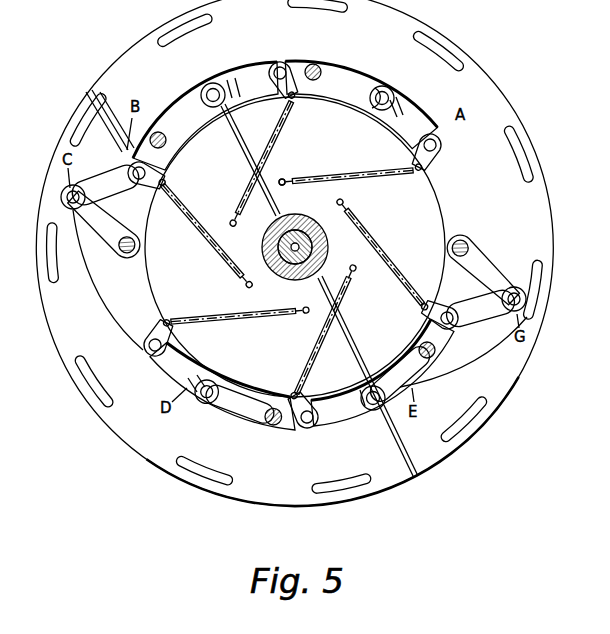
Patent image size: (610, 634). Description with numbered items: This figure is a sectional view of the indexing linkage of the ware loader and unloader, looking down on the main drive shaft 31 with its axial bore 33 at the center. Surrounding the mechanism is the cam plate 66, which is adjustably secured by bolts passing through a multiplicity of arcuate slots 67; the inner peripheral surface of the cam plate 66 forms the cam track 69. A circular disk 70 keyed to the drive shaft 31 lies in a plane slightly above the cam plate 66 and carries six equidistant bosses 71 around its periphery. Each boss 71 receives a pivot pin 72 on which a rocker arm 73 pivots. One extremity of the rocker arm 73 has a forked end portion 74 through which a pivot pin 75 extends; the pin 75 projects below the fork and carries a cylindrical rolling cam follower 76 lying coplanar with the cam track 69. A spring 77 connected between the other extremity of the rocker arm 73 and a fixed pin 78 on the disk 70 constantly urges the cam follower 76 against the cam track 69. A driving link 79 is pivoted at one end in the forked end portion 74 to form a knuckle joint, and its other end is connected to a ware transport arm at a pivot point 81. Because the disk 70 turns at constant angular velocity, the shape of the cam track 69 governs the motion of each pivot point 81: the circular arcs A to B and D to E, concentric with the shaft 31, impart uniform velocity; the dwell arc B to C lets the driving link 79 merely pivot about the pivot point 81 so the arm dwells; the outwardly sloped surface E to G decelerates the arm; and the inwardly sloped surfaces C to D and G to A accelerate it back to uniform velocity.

The main drive shaft 31 is at (302, 232).
The axial bore 33 is at (290, 262).
The cam plate 66 is at (138, 452).
The arcuate slots 67 is at (83, 372).
The cam track 69 is at (105, 314).
The circular disk 70 is at (152, 270).
The boss 71 is at (147, 186).
The pivot pin 72 is at (437, 146).
The rocker arm 73 is at (423, 114).
The forked end portion 74 is at (396, 102).
The pivot pin 75 is at (383, 91).
The cam follower 76 is at (370, 87).
The spring 77 is at (341, 172).
The fixed pin 78 is at (282, 178).
The driving link 79 is at (347, 67).
The pivot point 81 is at (313, 64).